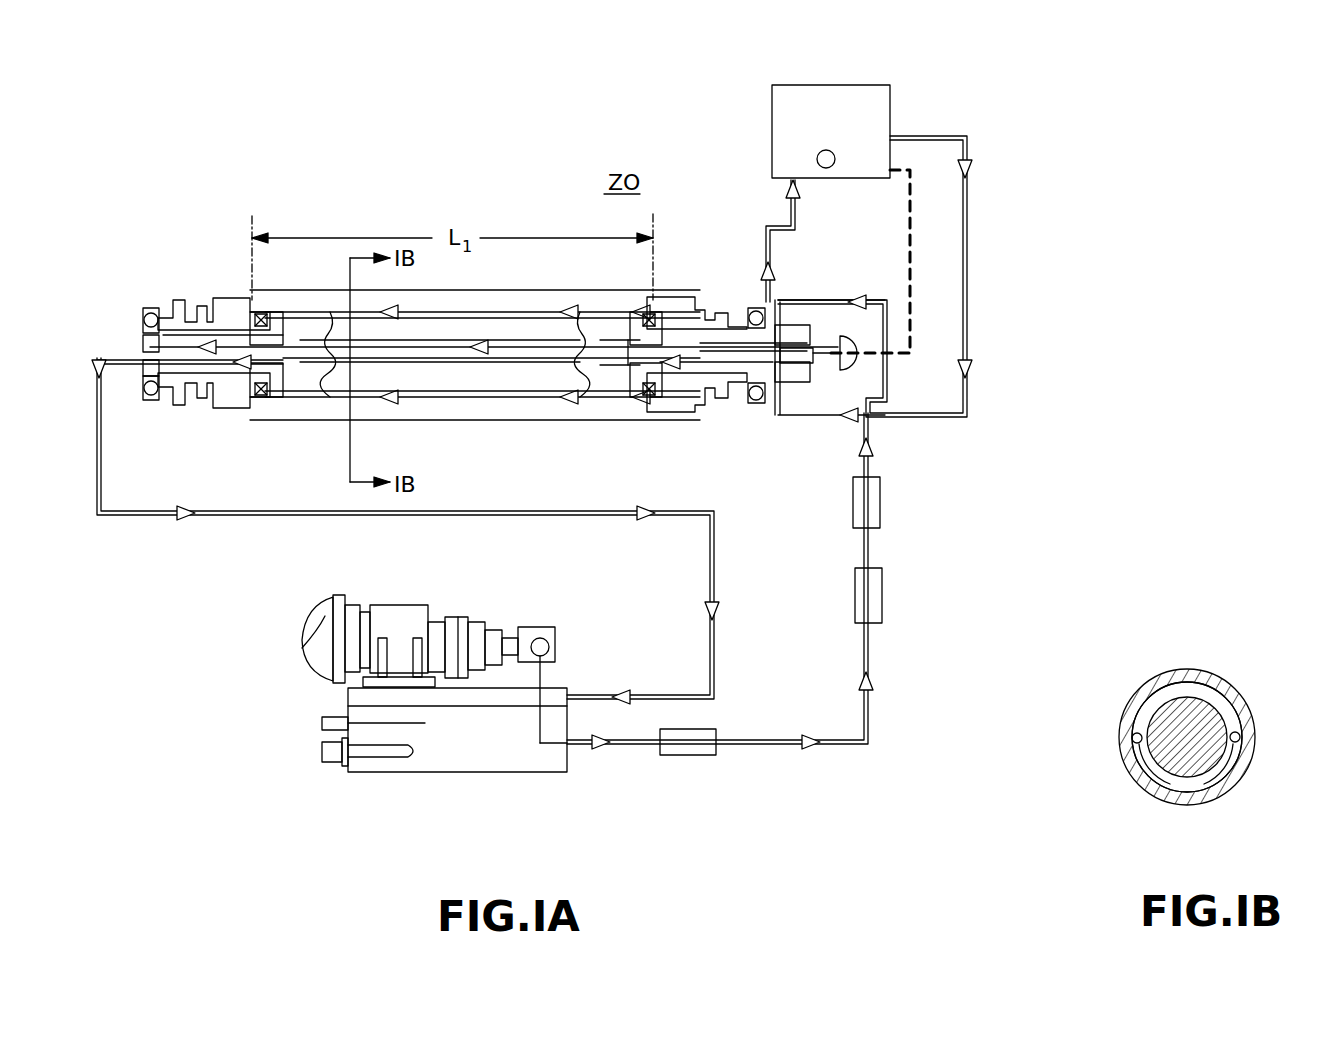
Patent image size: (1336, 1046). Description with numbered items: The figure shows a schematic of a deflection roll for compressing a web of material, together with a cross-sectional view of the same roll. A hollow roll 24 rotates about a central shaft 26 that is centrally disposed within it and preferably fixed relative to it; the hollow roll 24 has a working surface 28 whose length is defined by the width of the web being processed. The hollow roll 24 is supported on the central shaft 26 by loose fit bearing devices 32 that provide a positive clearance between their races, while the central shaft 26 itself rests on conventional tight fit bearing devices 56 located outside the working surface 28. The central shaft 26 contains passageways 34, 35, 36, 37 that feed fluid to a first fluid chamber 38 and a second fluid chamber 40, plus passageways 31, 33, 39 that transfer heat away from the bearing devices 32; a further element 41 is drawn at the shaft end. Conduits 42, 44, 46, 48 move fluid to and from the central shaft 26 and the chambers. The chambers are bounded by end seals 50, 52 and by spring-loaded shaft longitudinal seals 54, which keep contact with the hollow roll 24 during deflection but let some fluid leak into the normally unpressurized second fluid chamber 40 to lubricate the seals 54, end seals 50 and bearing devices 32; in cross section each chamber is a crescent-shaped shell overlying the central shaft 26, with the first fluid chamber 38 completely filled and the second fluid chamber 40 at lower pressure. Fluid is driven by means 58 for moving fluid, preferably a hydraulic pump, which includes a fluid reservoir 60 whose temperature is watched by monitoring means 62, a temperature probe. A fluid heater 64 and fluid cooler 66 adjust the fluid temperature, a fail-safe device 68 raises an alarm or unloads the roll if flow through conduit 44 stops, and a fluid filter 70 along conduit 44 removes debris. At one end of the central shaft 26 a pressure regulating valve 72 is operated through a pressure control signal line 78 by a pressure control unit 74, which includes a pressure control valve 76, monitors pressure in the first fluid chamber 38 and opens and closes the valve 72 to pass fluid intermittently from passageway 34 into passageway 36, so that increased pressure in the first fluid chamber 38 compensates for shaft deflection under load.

In FIG. 1A, the hollow roll 24 is at (367, 310).
In FIG. 1B, the hollow roll 24 is at (1138, 668).
In FIG. 1A, the central shaft 26 is at (165, 312).
In FIG. 1B, the central shaft 26 is at (1170, 756).
In FIG. 1A, the working surface 28 is at (510, 297).
In FIG. 1B, the working surface 28 is at (1208, 672).
In FIG. 1A, the passageway 31 is at (795, 340).
In FIG. 1A, the bearing devices 32 is at (252, 290).
In FIG. 1A, the passageway 33 is at (814, 365).
In FIG. 1A, the passageway 34 is at (713, 308).
In FIG. 1A, the passageway 35 is at (238, 312).
In FIG. 1A, the passageway 36 is at (718, 411).
In FIG. 1A, the passageway 37 is at (213, 384).
In FIG. 1A, the first fluid chamber 38 is at (556, 312).
In FIG. 1B, the first fluid chamber 38 is at (1212, 702).
In FIG. 1A, the passageway 39 is at (144, 334).
In FIG. 1A, the second fluid chamber 40 is at (520, 397).
In FIG. 1B, the second fluid chamber 40 is at (1215, 781).
In FIG. 1A, the end cap 41 is at (145, 398).
In FIG. 1A, the conduit 42 is at (967, 301).
In FIG. 1A, the conduit 44 is at (872, 649).
In FIG. 1A, the conduit 46 is at (437, 515).
In FIG. 1A, the conduit 48 is at (770, 228).
In FIG. 1A, the end seals 50 is at (275, 312).
In FIG. 1A, the end seals 52 is at (640, 402).
In FIG. 1A, the shaft longitudinal seals 54 is at (426, 363).
In FIG. 1B, the shaft longitudinal seals 54 is at (1133, 745).
In FIG. 1A, the bearing devices 56 is at (152, 386).
In FIG. 1A, the means for moving fluid 58 is at (325, 635).
In FIG. 1A, the fluid reservoir 60 is at (495, 760).
In FIG. 1A, the means for monitoring temperature 62 is at (322, 723).
In FIG. 1A, the fluid heater 64 is at (326, 750).
In FIG. 1A, the fluid cooler 66 is at (690, 768).
In FIG. 1A, the fail-safe device 68 is at (882, 593).
In FIG. 1A, the fluid filter 70 is at (880, 503).
In FIG. 1A, the pressure regulating valve 72 is at (782, 417).
In FIG. 1A, the pressure control unit 74 is at (785, 113).
In FIG. 1A, the pressure control valve 76 is at (816, 156).
In FIG. 1A, the pressure control signal line 78 is at (912, 240).